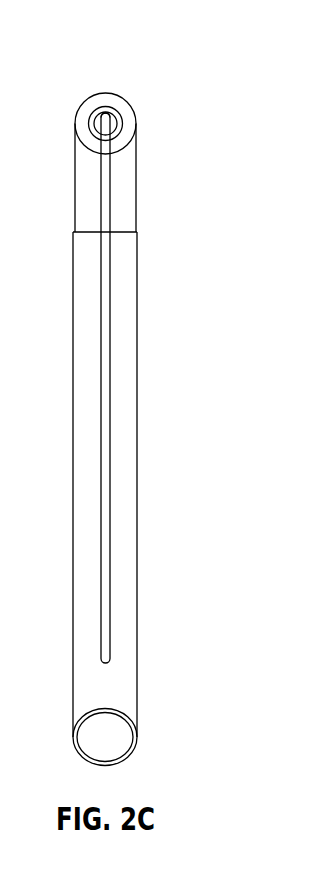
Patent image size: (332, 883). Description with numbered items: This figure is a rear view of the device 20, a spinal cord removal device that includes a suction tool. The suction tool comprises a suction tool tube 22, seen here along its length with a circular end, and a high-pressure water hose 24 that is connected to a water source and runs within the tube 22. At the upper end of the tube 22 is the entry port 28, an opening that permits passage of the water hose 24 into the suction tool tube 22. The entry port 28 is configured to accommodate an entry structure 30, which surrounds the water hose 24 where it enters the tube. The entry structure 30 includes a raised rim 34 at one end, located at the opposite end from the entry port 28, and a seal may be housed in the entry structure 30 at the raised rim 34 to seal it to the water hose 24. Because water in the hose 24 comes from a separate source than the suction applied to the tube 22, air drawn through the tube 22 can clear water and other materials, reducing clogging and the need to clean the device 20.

The device 20 is at (142, 76).
The suction tool tube 22 is at (74, 195).
The water hose 24 is at (101, 382).
The entry port 28 is at (91, 125).
The entry structure 30 is at (106, 113).
The raised rim 34 is at (96, 118).